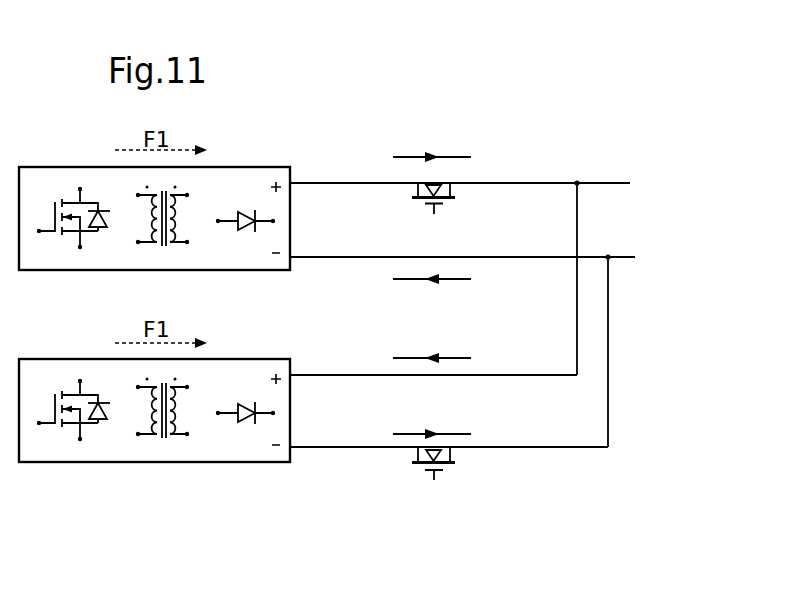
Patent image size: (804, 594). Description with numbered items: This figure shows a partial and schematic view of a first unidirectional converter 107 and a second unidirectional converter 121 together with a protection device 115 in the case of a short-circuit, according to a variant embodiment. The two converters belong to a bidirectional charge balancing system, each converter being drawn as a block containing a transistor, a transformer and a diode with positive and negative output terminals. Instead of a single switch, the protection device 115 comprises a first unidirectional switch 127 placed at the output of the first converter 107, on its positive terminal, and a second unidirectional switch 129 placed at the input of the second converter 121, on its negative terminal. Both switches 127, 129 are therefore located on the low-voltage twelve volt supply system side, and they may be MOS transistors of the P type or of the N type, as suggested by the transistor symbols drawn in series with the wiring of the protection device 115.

The first unidirectional converter 107 is at (246, 167).
The second unidirectional converter 121 is at (222, 463).
The protection device 115 is at (630, 152).
The first unidirectional switch 127 is at (431, 130).
The second unidirectional switch 129 is at (452, 492).